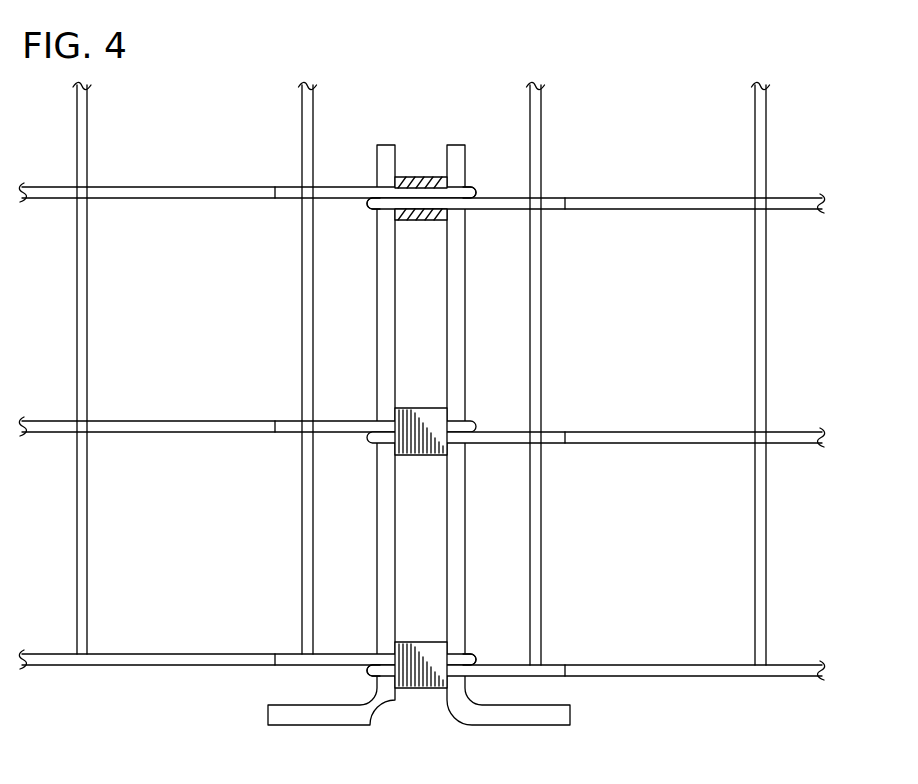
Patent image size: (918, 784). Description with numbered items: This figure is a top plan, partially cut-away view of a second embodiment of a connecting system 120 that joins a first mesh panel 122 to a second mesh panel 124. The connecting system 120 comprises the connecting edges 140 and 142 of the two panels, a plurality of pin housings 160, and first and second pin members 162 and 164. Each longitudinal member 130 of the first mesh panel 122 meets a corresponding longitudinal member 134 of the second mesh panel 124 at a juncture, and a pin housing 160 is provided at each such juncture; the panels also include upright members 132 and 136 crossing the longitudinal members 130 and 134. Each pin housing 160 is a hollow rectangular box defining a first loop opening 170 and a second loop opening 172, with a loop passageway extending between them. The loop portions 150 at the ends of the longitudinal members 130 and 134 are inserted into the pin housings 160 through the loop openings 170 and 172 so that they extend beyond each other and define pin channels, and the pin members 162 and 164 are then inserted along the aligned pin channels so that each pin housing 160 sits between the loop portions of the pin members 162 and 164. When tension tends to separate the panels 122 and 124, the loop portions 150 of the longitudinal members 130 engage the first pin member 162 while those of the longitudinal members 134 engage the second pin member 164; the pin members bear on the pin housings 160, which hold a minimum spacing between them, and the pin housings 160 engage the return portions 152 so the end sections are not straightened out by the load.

The connecting system 120 is at (493, 82).
The first mesh panel 122 is at (673, 145).
The second mesh panel 124 is at (170, 140).
The longitudinal member 130 is at (648, 208).
The right post 132 is at (760, 298).
The longitudinal member 134 is at (135, 197).
The left post 136 is at (85, 298).
The connecting edge 140 is at (480, 168).
The connecting edge 142 is at (356, 168).
The loop portion 150 is at (483, 657).
The return portion 152 is at (286, 655).
The pin housing 160 is at (420, 177).
The first pin member 162 is at (464, 355).
The second pin member 164 is at (378, 355).
The first loop opening 170 is at (458, 212).
The second loop opening 172 is at (383, 212).